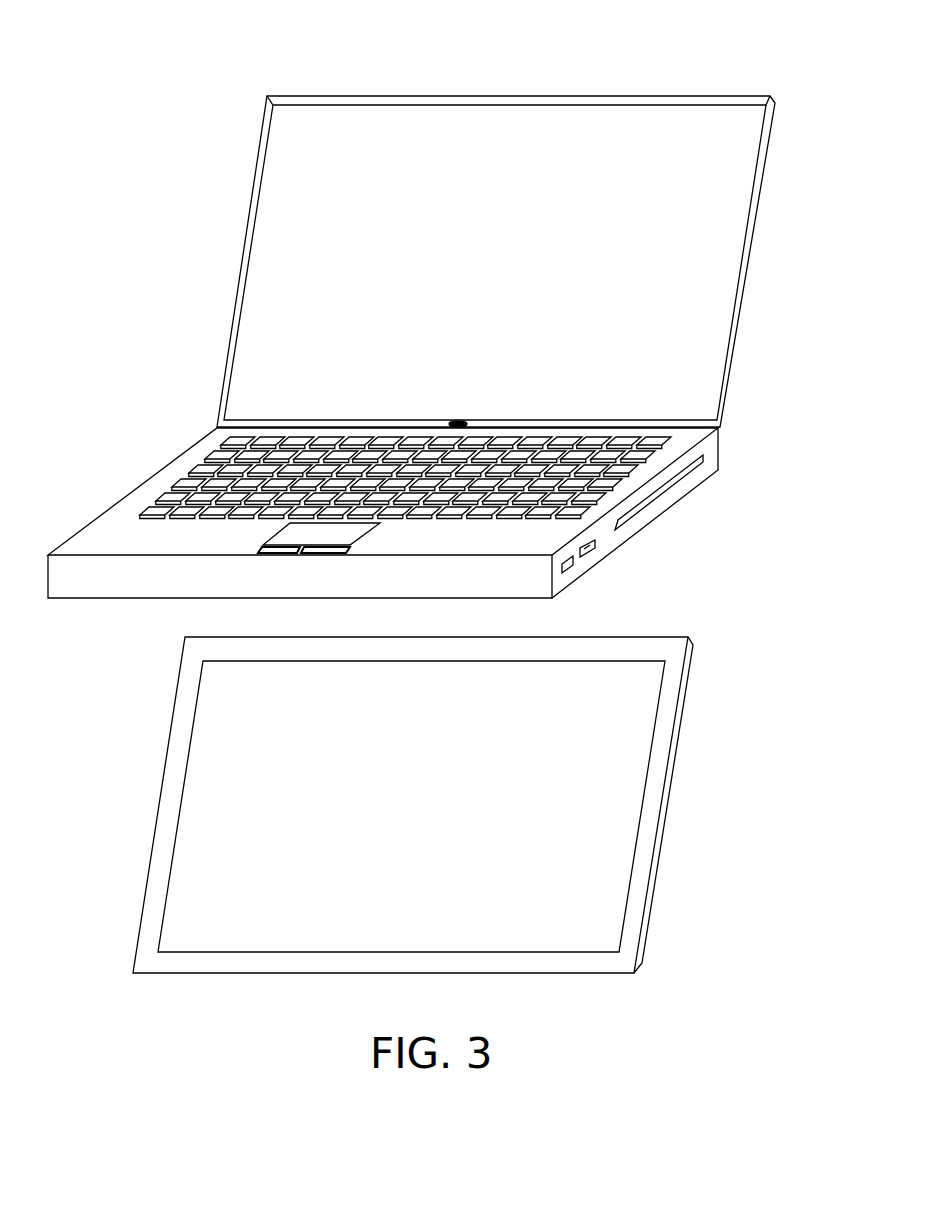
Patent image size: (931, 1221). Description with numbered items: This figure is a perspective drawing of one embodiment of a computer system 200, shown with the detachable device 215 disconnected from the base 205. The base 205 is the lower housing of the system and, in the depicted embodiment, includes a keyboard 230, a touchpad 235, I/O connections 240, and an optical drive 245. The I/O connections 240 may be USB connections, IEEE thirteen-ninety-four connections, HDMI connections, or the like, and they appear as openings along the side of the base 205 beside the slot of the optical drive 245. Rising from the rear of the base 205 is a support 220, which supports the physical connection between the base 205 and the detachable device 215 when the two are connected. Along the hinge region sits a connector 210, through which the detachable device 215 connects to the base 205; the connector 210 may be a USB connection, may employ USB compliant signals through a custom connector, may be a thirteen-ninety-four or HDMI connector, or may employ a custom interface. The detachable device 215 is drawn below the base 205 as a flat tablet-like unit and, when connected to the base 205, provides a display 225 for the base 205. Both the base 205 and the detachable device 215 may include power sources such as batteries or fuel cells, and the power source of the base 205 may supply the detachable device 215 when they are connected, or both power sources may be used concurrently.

The computer system 200 is at (88, 54).
The base 205 is at (145, 492).
The connector 210 is at (457, 424).
The detachable device 215 is at (178, 745).
The support 220 is at (290, 240).
The display 225 is at (197, 828).
The keyboard 230 is at (222, 465).
The touchpad 235 is at (290, 547).
The I/O connections 240 is at (573, 565).
The optical drive 245 is at (704, 462).